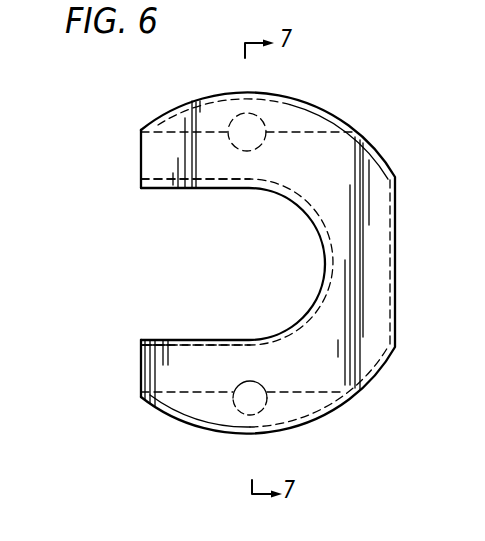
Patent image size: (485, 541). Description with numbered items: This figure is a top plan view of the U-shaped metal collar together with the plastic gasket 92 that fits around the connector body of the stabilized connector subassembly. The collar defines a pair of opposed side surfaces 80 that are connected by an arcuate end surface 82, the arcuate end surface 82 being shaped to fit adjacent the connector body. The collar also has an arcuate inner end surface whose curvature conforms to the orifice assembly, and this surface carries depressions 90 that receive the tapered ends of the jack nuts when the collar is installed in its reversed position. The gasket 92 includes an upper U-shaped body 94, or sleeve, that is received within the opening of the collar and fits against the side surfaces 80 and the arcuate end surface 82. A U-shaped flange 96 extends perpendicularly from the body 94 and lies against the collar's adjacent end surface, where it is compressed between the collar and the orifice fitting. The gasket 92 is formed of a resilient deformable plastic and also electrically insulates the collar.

The opposed side surfaces 80 is at (200, 181).
The arcuate end surface 82 is at (319, 232).
The depressions 90 is at (264, 122).
The gasket 92 is at (150, 190).
The U-shaped body 94 is at (162, 338).
The U-shaped flange 96 is at (170, 132).